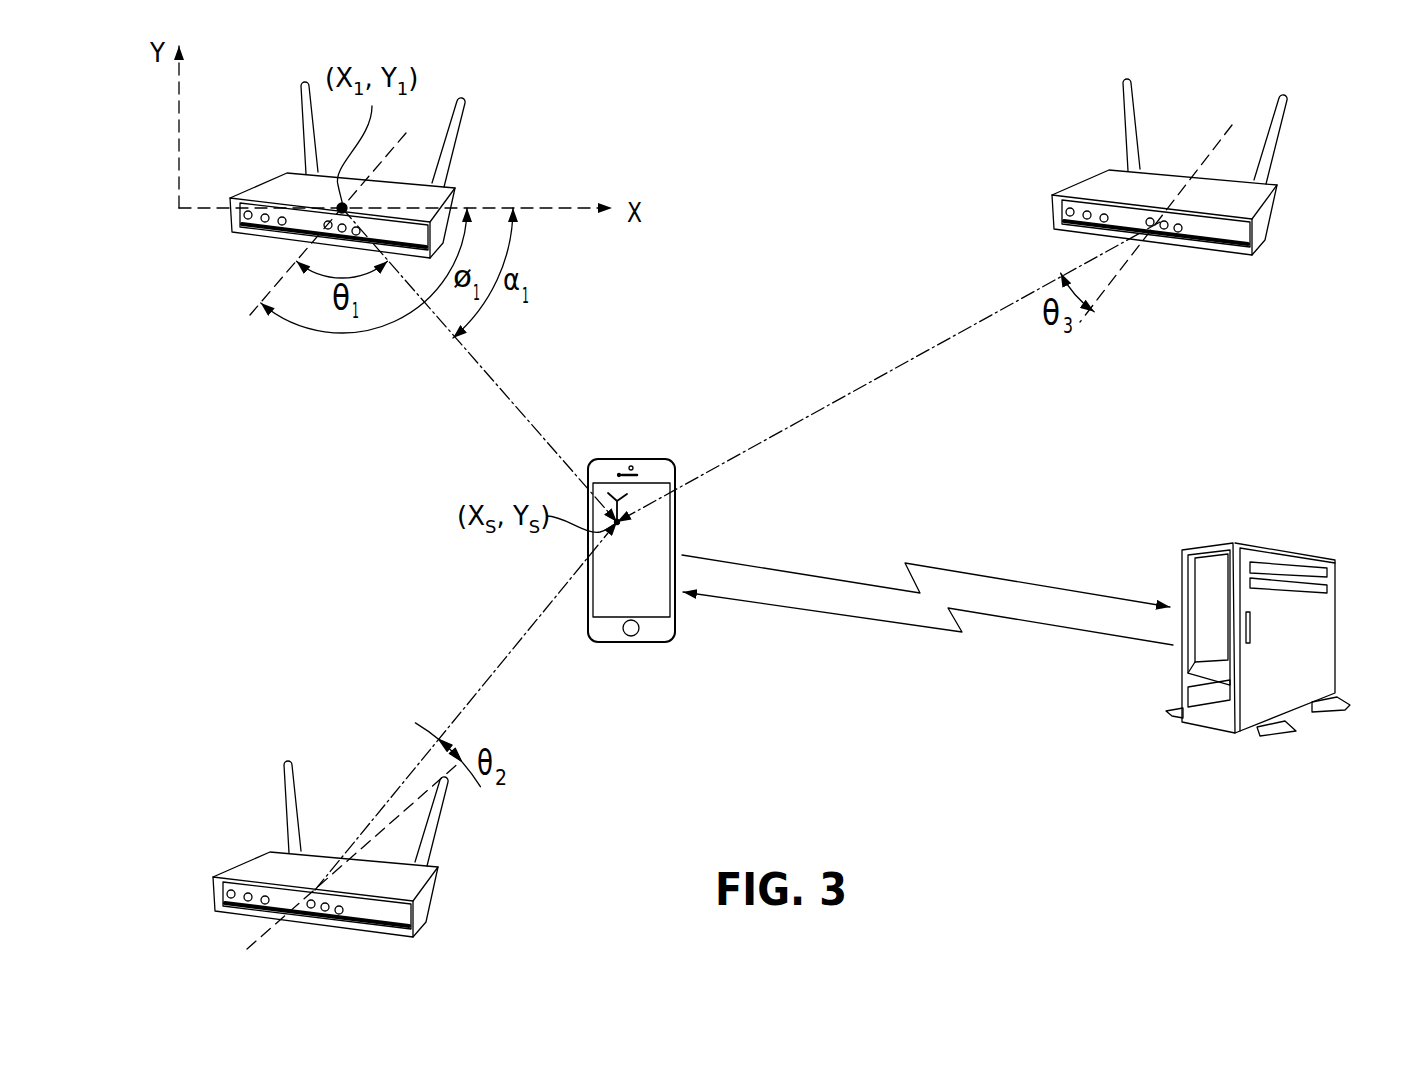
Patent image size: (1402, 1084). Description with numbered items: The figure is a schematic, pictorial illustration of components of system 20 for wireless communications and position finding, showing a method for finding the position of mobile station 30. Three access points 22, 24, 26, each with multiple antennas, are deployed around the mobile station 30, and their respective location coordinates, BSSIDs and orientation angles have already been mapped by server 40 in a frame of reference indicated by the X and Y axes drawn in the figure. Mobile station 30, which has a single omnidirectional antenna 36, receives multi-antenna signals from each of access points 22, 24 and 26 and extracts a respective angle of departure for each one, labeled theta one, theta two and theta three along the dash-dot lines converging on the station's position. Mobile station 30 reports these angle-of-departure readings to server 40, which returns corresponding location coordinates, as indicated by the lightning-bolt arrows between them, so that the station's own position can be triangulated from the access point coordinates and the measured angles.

The system 20 is at (1066, 853).
The access point 22 is at (277, 189).
The access point 24 is at (1283, 186).
The access point 26 is at (442, 870).
The mobile station 30 is at (601, 633).
The omnidirectional antenna 36 is at (608, 491).
The server 40 is at (1335, 615).